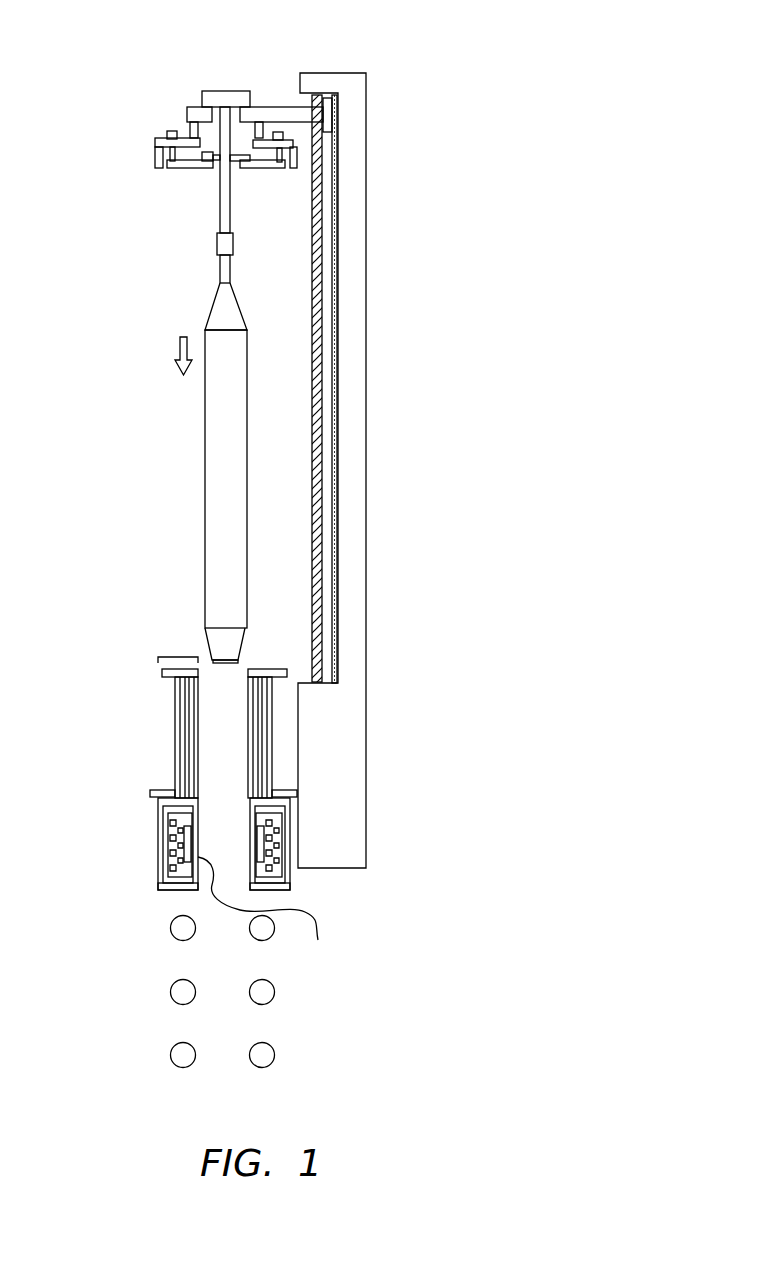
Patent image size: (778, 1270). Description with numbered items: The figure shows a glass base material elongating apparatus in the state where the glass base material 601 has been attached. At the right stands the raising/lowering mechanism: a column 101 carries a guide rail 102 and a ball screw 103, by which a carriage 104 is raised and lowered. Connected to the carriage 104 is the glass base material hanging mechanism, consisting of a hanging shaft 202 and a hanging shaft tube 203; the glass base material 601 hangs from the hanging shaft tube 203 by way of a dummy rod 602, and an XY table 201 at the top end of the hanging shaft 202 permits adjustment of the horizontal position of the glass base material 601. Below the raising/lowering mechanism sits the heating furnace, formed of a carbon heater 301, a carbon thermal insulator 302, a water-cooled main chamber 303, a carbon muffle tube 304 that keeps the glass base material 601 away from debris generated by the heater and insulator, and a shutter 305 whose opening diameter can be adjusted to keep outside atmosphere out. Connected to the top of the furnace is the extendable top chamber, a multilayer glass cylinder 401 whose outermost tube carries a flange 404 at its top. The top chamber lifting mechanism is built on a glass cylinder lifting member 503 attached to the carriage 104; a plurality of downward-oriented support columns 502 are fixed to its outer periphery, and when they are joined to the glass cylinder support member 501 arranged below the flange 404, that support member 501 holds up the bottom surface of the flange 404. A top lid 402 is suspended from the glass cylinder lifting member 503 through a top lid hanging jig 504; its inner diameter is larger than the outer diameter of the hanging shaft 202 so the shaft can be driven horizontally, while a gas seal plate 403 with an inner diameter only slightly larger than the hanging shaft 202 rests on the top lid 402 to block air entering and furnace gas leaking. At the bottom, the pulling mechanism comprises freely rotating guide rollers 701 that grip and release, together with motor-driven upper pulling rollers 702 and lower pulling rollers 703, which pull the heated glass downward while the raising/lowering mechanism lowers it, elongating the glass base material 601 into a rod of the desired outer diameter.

The column 101 is at (348, 468).
The guide rail 102 is at (338, 323).
The ball screw 103 is at (322, 407).
The carriage 104 is at (276, 112).
The XY table 201 is at (232, 91).
The hanging shaft 202 is at (218, 212).
The hanging shaft tube 203 is at (217, 245).
The carbon heater 301 is at (172, 852).
The carbon thermal insulator 302 is at (172, 823).
The water-cooled main chamber 303 is at (157, 868).
The carbon muffle tube 304 is at (270, 912).
The shutter 305 is at (168, 889).
The multilayer glass cylinder 401 is at (178, 657).
The top lid 402 is at (250, 170).
The gas seal plate 403 is at (200, 158).
The flange 404 is at (162, 673).
The glass cylinder support member 501 is at (155, 793).
The support columns 502 is at (155, 161).
The glass cylinder lifting member 503 is at (155, 140).
The top lid hanging jig 504 is at (169, 135).
The glass base material 601 is at (208, 448).
The dummy rod 602 is at (218, 268).
The guide rollers 701 is at (181, 929).
The upper pulling rollers 702 is at (181, 991).
The lower pulling rollers 703 is at (181, 1054).